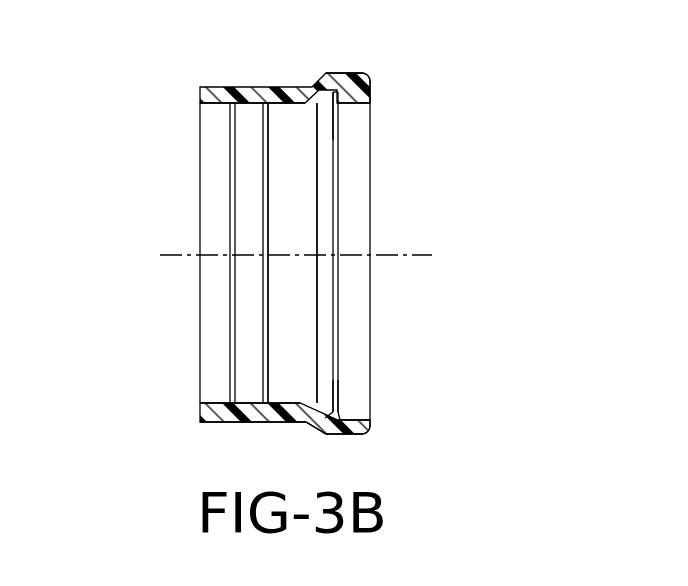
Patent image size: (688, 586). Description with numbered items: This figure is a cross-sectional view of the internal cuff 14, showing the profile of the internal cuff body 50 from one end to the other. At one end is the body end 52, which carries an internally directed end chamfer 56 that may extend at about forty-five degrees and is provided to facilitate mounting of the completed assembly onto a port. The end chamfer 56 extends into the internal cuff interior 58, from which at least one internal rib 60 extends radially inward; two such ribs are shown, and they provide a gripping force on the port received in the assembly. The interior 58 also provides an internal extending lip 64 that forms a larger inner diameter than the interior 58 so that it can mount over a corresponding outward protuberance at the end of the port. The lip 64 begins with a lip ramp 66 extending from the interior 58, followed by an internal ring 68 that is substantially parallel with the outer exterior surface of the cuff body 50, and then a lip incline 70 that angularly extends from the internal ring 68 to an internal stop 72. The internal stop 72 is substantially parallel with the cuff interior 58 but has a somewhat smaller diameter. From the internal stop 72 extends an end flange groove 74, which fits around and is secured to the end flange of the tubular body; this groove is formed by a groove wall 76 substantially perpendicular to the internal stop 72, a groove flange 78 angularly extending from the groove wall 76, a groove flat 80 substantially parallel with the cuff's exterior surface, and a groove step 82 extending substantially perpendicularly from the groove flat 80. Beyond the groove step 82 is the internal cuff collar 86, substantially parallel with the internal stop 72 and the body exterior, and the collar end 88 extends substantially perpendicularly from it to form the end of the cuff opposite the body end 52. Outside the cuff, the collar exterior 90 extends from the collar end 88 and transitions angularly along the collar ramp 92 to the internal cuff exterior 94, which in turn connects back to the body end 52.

The seal assembly 14 is at (366, 37).
The internal cuff body 50 is at (261, 85).
The body end 52 is at (201, 89).
The end chamfer 56 is at (203, 104).
The internal cuff interior 58 is at (229, 104).
The internal rib 60 is at (262, 105).
The internal extending lip 64 is at (293, 392).
The lip ramp 66 is at (270, 104).
The internal ring 68 is at (304, 104).
The lip incline 70 is at (318, 110).
The internal stop 72 is at (332, 122).
The end flange groove 74 is at (339, 130).
The groove wall 76 is at (337, 350).
The groove flange 78 is at (332, 392).
The groove flat 80 is at (339, 118).
The groove step 82 is at (345, 405).
The internal cuff collar 86 is at (371, 108).
The collar end 88 is at (371, 80).
The collar exterior 90 is at (340, 432).
The collar ramp 92 is at (320, 430).
The internal cuff exterior 94 is at (245, 422).